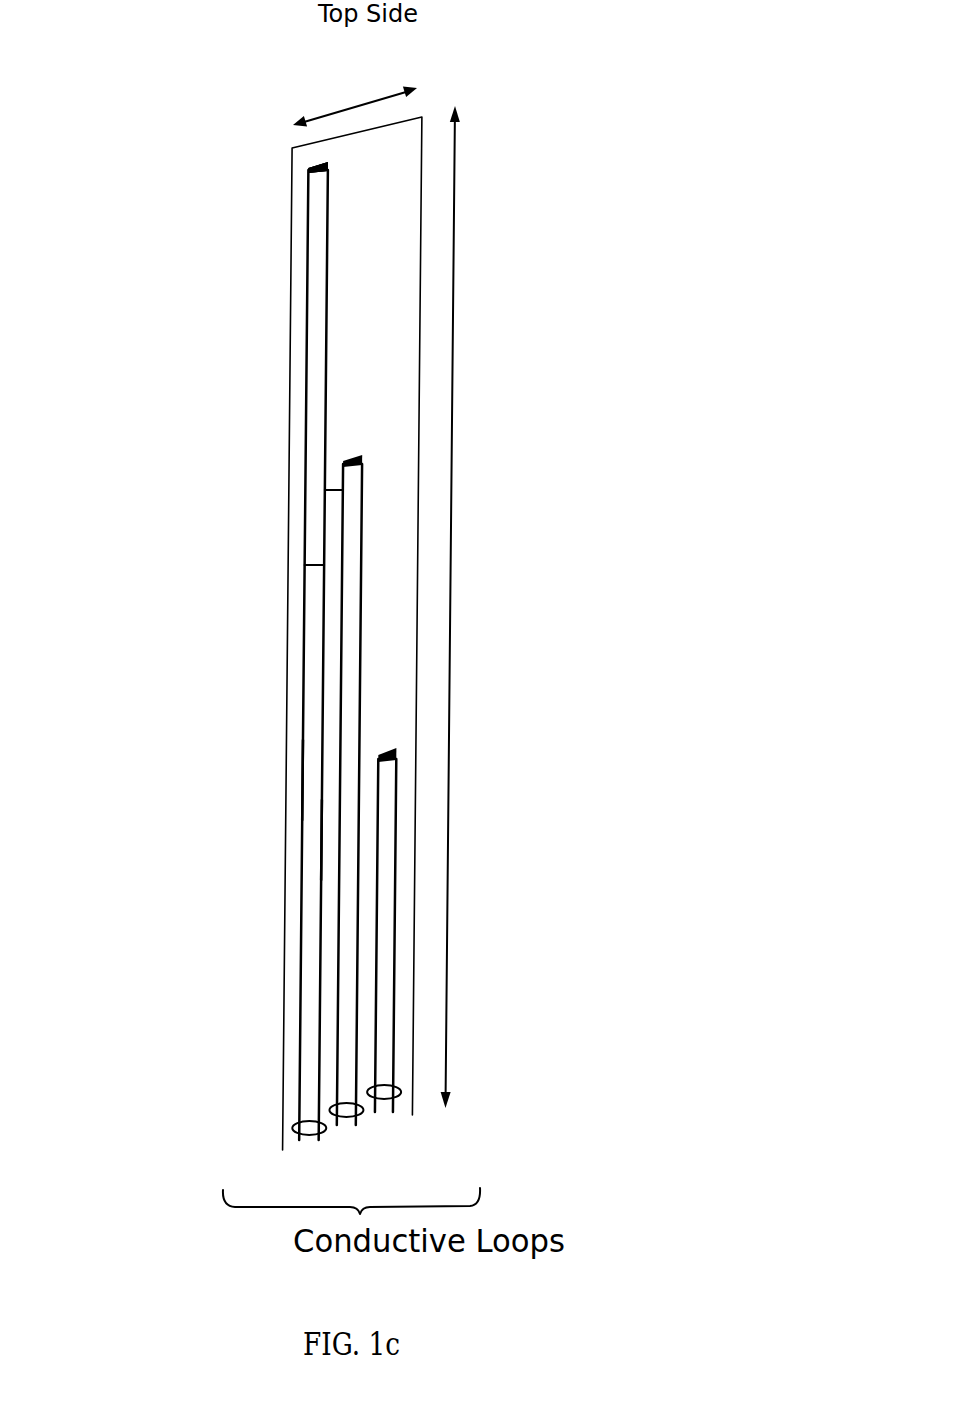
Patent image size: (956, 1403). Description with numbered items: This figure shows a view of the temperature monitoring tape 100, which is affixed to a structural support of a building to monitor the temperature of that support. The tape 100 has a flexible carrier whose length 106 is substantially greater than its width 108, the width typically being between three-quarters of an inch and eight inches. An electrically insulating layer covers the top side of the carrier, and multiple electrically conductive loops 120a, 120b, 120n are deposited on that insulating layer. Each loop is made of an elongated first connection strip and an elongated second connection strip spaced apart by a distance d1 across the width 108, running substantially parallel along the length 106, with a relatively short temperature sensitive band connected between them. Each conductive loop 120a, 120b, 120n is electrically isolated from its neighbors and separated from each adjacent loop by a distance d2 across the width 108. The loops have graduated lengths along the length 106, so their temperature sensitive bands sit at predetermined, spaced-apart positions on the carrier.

The temperature monitoring tape 100 is at (266, 76).
The length 106 is at (453, 432).
The width 108 is at (388, 97).
The electrically conductive loop 120a is at (281, 680).
The electrically conductive loop 120b is at (352, 1118).
The electrically conductive loop 120n is at (384, 1100).
The distance d1 is at (320, 565).
The distance d2 is at (334, 490).